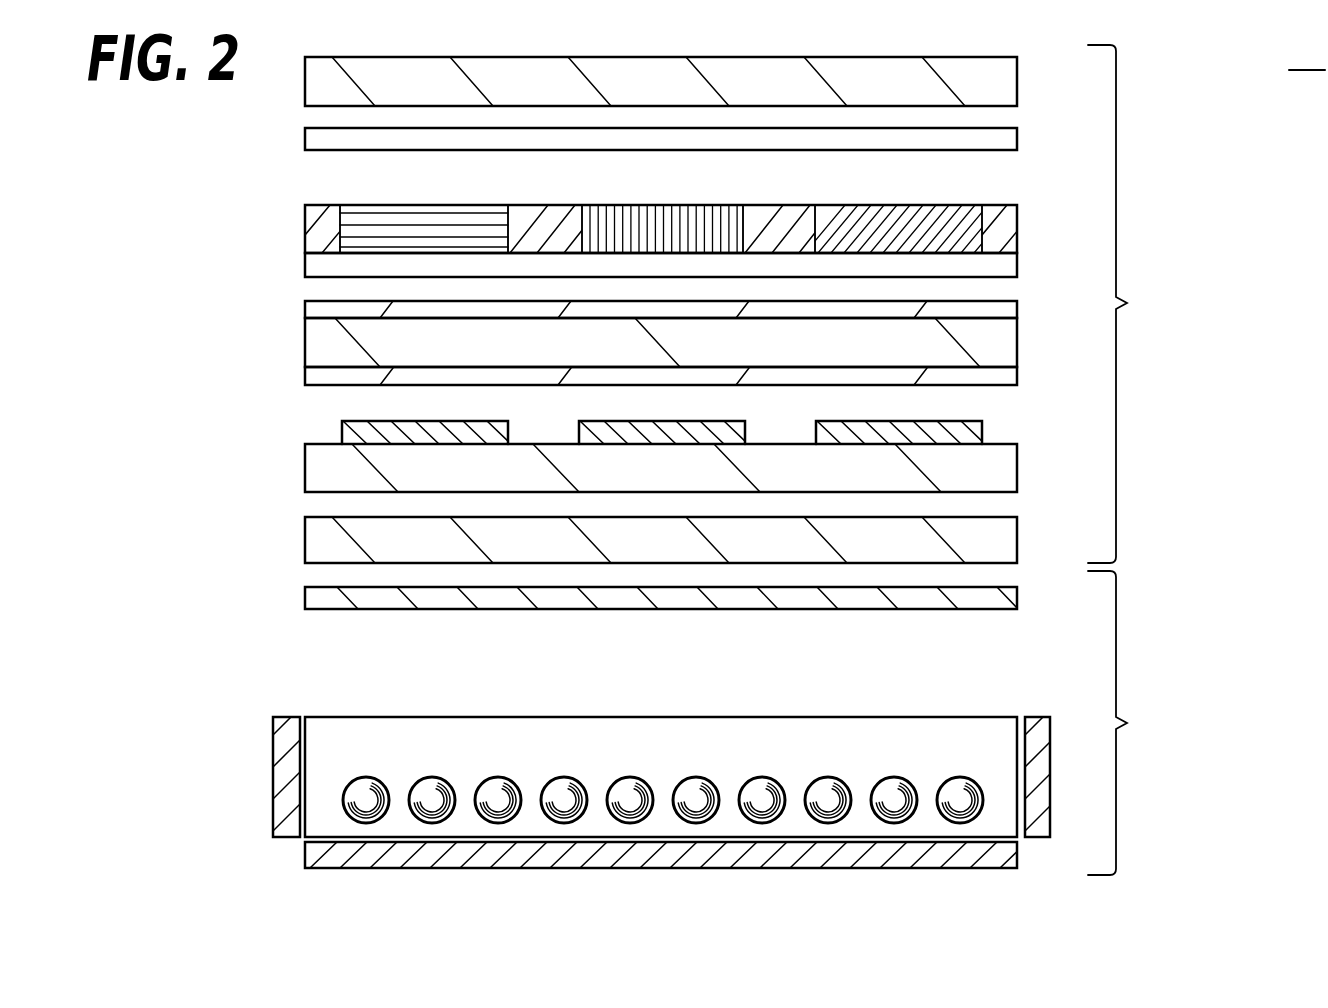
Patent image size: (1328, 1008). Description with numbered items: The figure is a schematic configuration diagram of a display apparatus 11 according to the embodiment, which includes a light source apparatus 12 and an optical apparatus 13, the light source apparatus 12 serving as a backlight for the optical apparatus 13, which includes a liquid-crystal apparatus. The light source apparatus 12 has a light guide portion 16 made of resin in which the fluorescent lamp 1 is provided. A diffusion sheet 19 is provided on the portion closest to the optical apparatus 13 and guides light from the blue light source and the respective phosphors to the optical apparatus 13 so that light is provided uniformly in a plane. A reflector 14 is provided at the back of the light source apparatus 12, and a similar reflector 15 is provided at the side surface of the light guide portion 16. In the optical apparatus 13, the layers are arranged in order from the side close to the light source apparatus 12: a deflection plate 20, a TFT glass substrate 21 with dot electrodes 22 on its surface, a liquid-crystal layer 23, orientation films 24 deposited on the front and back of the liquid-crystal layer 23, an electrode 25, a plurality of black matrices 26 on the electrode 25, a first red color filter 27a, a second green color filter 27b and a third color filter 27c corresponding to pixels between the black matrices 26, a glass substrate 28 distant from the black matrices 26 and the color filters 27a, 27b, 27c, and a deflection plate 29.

The fluorescent lamp 1 is at (957, 793).
The display apparatus 11 is at (1307, 49).
The light source apparatus 12 is at (1126, 723).
The optical apparatus 13 is at (1126, 304).
The reflector 14 is at (998, 857).
The reflector 15 is at (277, 768).
The light guide portion 16 is at (803, 750).
The diffusion sheet 19 is at (1017, 598).
The deflection plate 20 is at (997, 545).
The TFT glass substrate 21 is at (997, 473).
The dot electrodes 22 is at (948, 430).
The liquid-crystal layer 23 is at (997, 345).
The orientation films 24 is at (997, 313).
The electrode 25 is at (997, 271).
The black matrices 26 is at (687, 203).
The first (red) color filter 27a is at (362, 218).
The second (green) color filter 27b is at (615, 218).
The third color filter 27c is at (853, 216).
The glass substrate 28 is at (997, 148).
The deflection plate 29 is at (997, 75).